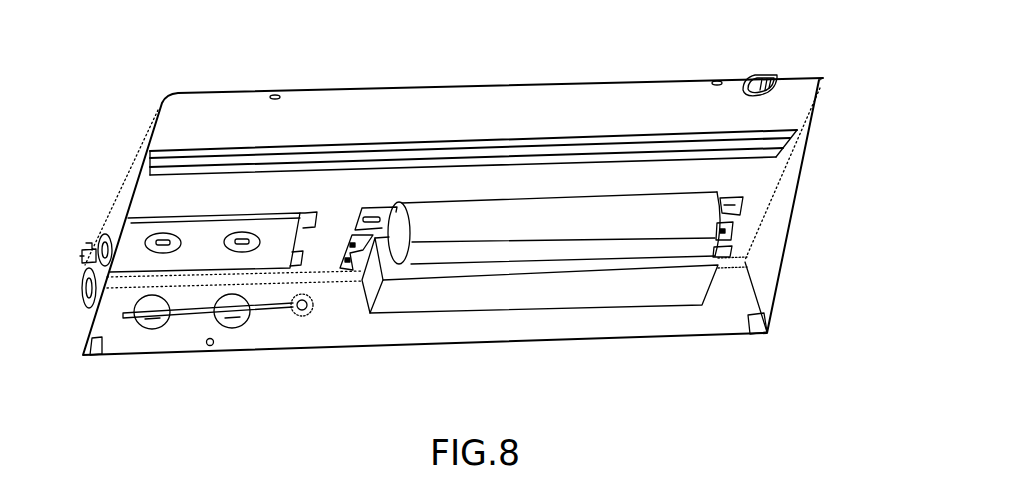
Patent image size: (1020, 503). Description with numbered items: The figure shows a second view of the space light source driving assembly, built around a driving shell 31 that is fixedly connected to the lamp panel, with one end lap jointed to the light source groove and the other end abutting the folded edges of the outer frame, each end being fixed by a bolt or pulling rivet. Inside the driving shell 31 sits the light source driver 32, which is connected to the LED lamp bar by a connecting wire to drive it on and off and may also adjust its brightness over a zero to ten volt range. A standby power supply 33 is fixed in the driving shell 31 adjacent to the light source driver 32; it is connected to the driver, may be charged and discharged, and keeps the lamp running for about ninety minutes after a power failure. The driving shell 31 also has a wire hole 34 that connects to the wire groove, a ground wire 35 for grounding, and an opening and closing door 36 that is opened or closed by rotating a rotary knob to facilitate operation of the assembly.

The driving shell 31 is at (357, 113).
The light source driver 32 is at (795, 140).
The standby power supply 33 is at (698, 280).
The wire hole 34 is at (763, 76).
The ground wire 35 is at (265, 310).
The opening and closing door 36 is at (138, 248).